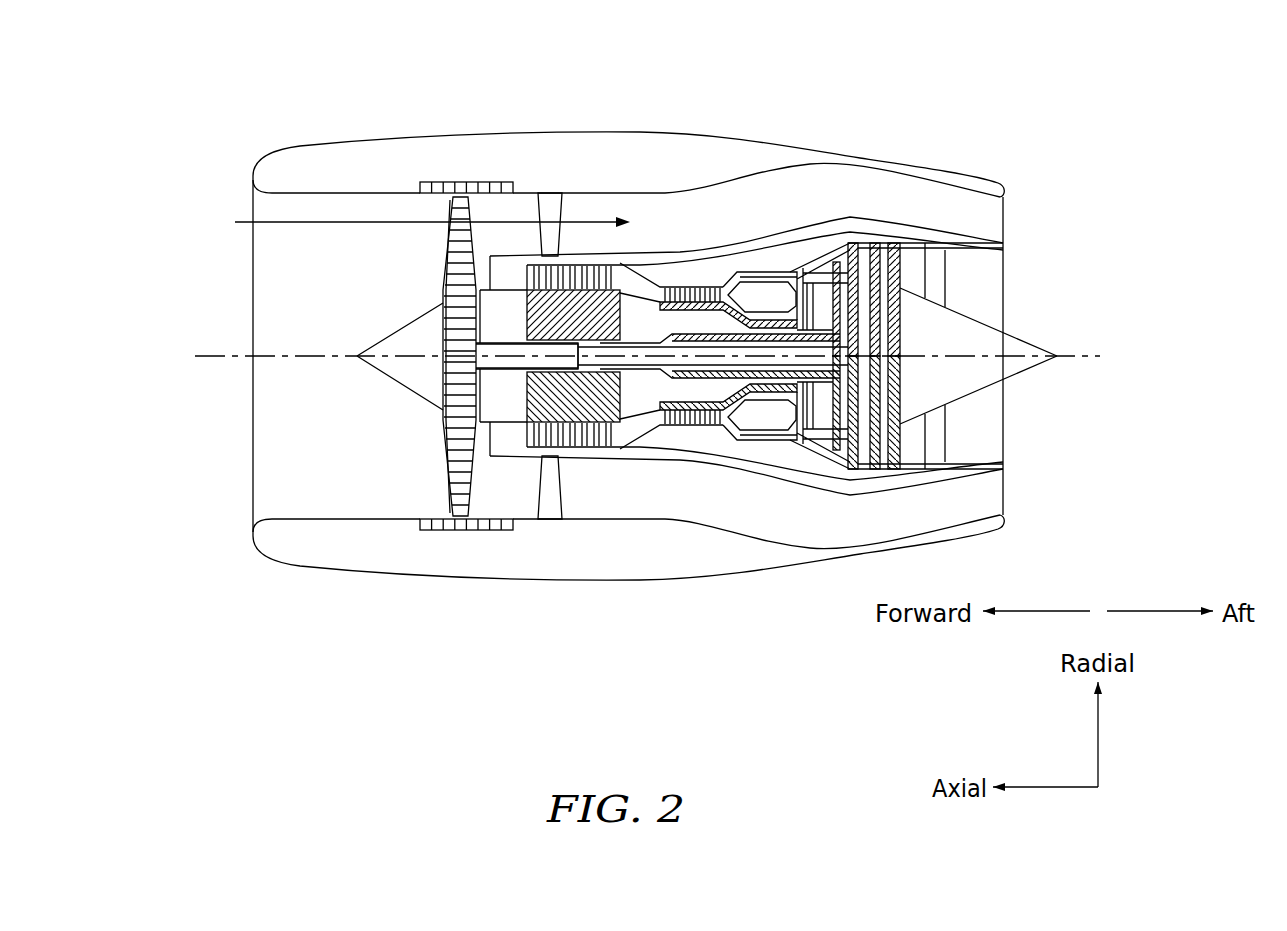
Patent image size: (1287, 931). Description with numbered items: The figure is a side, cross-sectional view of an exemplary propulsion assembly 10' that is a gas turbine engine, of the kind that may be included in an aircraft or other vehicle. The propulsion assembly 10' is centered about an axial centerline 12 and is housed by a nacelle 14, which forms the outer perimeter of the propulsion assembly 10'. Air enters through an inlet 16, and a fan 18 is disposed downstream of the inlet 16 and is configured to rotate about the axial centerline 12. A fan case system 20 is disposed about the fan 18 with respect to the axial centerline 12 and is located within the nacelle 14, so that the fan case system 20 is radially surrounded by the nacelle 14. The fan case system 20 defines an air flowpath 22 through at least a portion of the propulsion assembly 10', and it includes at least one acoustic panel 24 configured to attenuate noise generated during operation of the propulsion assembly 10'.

The propulsion assembly 10' is at (633, 336).
The axial centerline 12 is at (1082, 360).
The nacelle 14 is at (600, 131).
The inlet 16 is at (226, 245).
The fan 18 is at (460, 476).
The fan case system 20 is at (522, 181).
The air flowpath 22 is at (322, 222).
The acoustic panel 24 is at (463, 182).